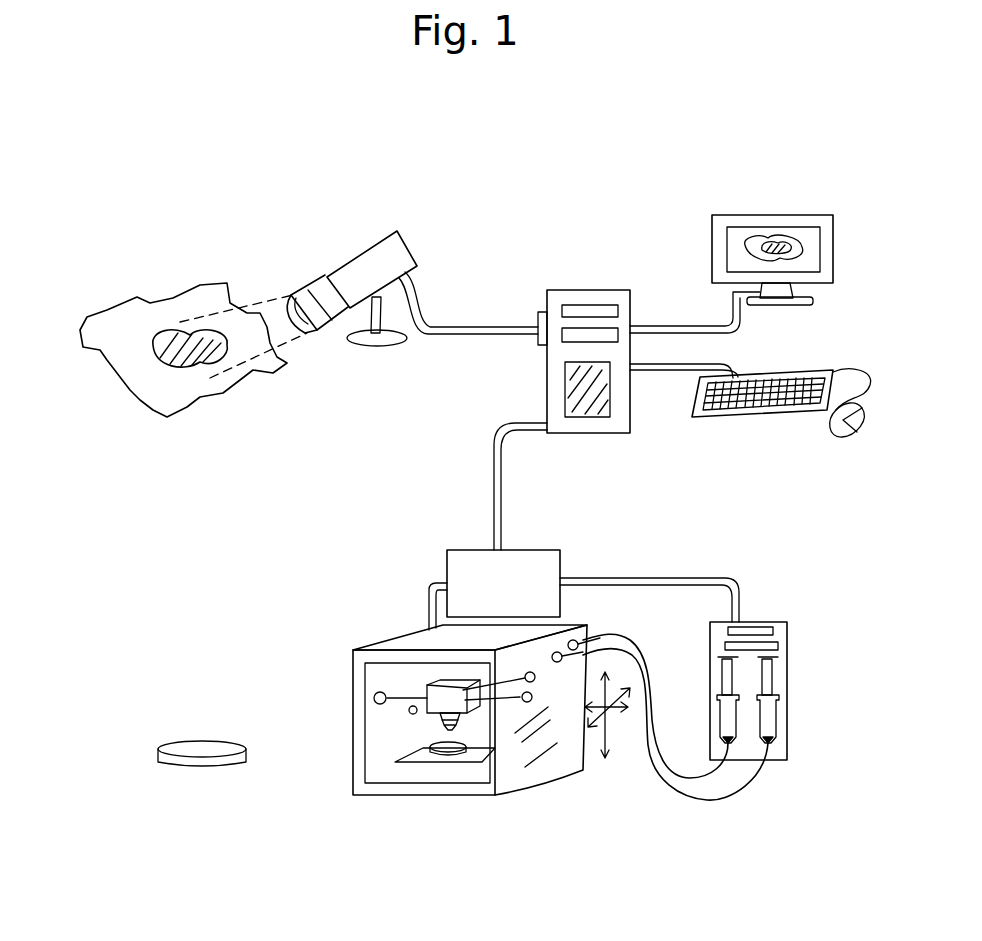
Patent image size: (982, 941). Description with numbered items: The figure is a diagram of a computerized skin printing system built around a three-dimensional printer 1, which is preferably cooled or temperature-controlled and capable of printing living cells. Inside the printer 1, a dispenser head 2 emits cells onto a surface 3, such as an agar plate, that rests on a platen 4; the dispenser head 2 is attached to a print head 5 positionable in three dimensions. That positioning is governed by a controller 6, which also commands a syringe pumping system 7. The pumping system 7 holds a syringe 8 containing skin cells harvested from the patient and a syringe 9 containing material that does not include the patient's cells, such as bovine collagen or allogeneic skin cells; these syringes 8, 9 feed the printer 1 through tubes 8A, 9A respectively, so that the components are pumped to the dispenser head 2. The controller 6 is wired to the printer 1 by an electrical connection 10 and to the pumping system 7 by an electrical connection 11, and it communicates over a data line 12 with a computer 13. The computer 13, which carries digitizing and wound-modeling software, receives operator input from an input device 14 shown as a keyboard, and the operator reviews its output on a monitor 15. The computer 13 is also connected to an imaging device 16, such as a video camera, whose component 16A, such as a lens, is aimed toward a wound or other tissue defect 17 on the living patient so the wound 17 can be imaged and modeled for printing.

The three-dimensional printer 1 is at (353, 795).
The dispenser head 2 is at (453, 725).
The surface 3 is at (430, 748).
The platen 4 is at (473, 767).
The print head 5 is at (427, 688).
The controller 6 is at (503, 583).
The syringe pumping system 7 is at (760, 622).
The syringe 8 is at (736, 700).
The syringe 9 is at (781, 700).
The tube 8A is at (655, 706).
The tube 9A is at (675, 740).
The electrical connection 10 is at (419, 606).
The electrical connection 11 is at (649, 581).
The data line 12 is at (502, 486).
The computer 13 is at (568, 433).
The input device 14 is at (750, 409).
The monitor 15 is at (731, 252).
The imaging device 16 is at (373, 248).
The component 16A is at (323, 297).
The wound 17 is at (143, 375).